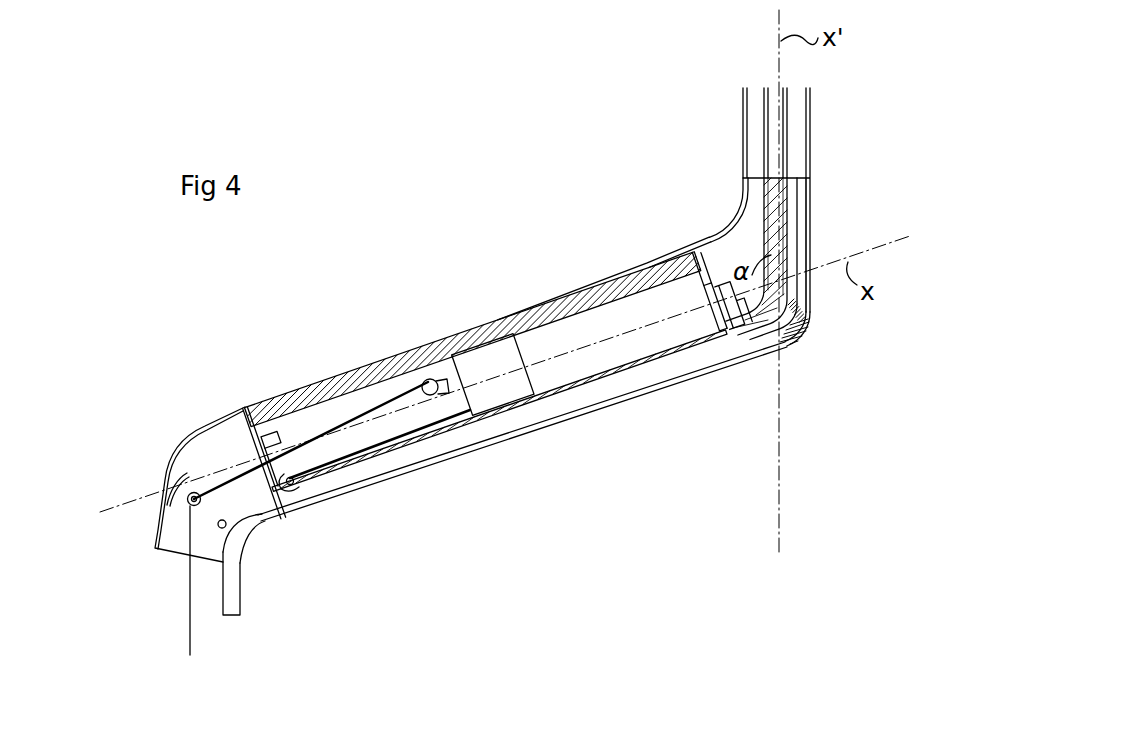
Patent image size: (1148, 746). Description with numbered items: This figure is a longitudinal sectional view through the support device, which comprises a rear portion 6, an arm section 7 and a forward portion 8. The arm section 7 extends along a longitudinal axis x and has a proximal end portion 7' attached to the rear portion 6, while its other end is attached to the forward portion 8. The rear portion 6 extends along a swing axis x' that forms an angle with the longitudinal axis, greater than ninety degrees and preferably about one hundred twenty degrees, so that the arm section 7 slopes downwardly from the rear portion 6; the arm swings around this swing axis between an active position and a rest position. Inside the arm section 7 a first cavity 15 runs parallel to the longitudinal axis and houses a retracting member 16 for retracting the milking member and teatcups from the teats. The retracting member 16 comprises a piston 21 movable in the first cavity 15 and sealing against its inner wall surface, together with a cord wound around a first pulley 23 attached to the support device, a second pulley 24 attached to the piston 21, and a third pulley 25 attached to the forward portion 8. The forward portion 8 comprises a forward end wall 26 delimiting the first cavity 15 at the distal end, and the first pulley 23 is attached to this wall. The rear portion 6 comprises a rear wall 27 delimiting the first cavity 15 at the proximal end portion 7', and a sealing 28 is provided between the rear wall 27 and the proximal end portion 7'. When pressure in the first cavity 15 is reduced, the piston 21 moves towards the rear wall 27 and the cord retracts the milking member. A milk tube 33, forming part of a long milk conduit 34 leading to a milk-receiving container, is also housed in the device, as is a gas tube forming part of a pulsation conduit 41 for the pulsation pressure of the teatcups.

The rear portion 6 is at (738, 231).
The arm section 7 is at (472, 339).
The proximal end portion 7' is at (621, 245).
The forward portion 8 is at (183, 428).
The first cavity 15 is at (608, 340).
The retracting member 16 is at (514, 414).
The piston 21 is at (498, 352).
The first pulley 23 is at (300, 490).
The second pulley 24 is at (424, 380).
The third pulley 25 is at (189, 505).
The forward end wall 26 is at (263, 433).
The rear wall 27 is at (708, 366).
The sealing 28 is at (690, 262).
The milk tube 33 is at (425, 463).
The long milk conduit 34 is at (787, 199).
The pulsation conduit 41 is at (798, 228).